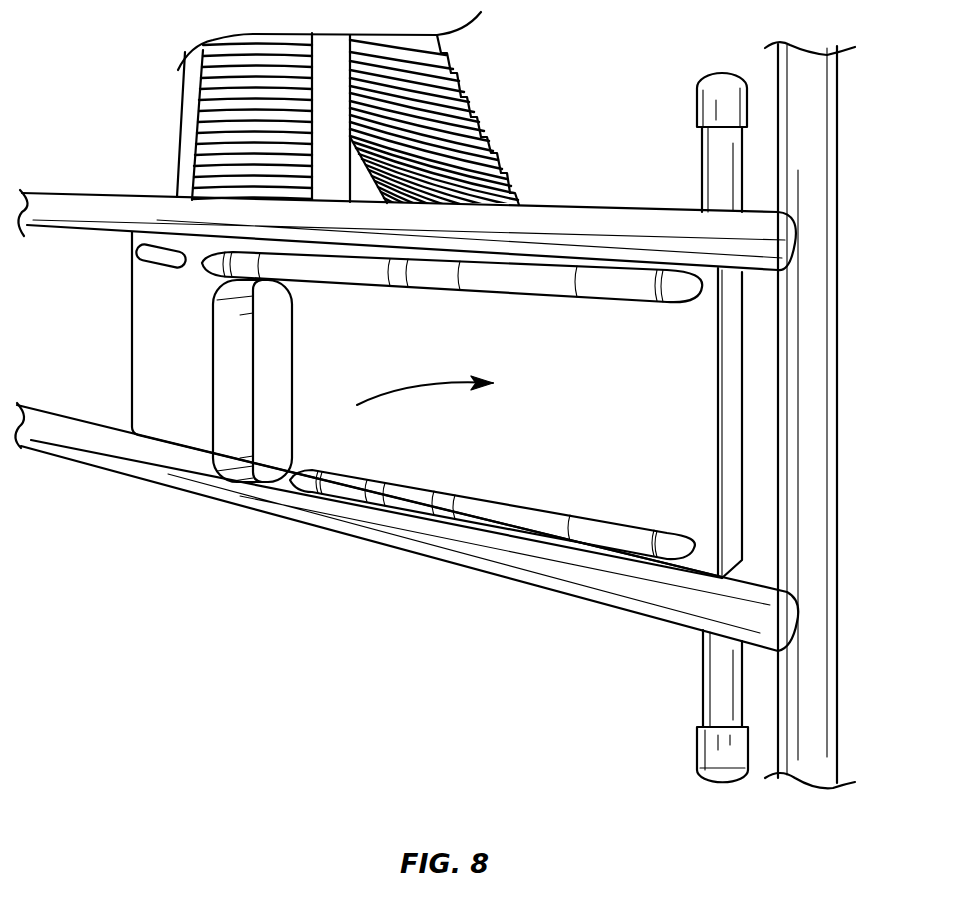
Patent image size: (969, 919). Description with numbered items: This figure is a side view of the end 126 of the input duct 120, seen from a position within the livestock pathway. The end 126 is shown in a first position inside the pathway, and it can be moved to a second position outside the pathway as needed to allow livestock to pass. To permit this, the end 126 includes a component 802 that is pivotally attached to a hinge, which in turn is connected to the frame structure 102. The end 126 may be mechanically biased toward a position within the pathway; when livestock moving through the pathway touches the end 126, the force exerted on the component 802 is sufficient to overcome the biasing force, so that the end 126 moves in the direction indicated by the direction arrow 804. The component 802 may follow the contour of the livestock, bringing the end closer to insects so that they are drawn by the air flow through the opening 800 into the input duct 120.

The frame structure 102 is at (808, 713).
The input duct 120 is at (473, 93).
The end 126 is at (273, 413).
The opening 800 is at (238, 385).
The component 802 is at (481, 437).
The direction arrow 804 is at (413, 386).